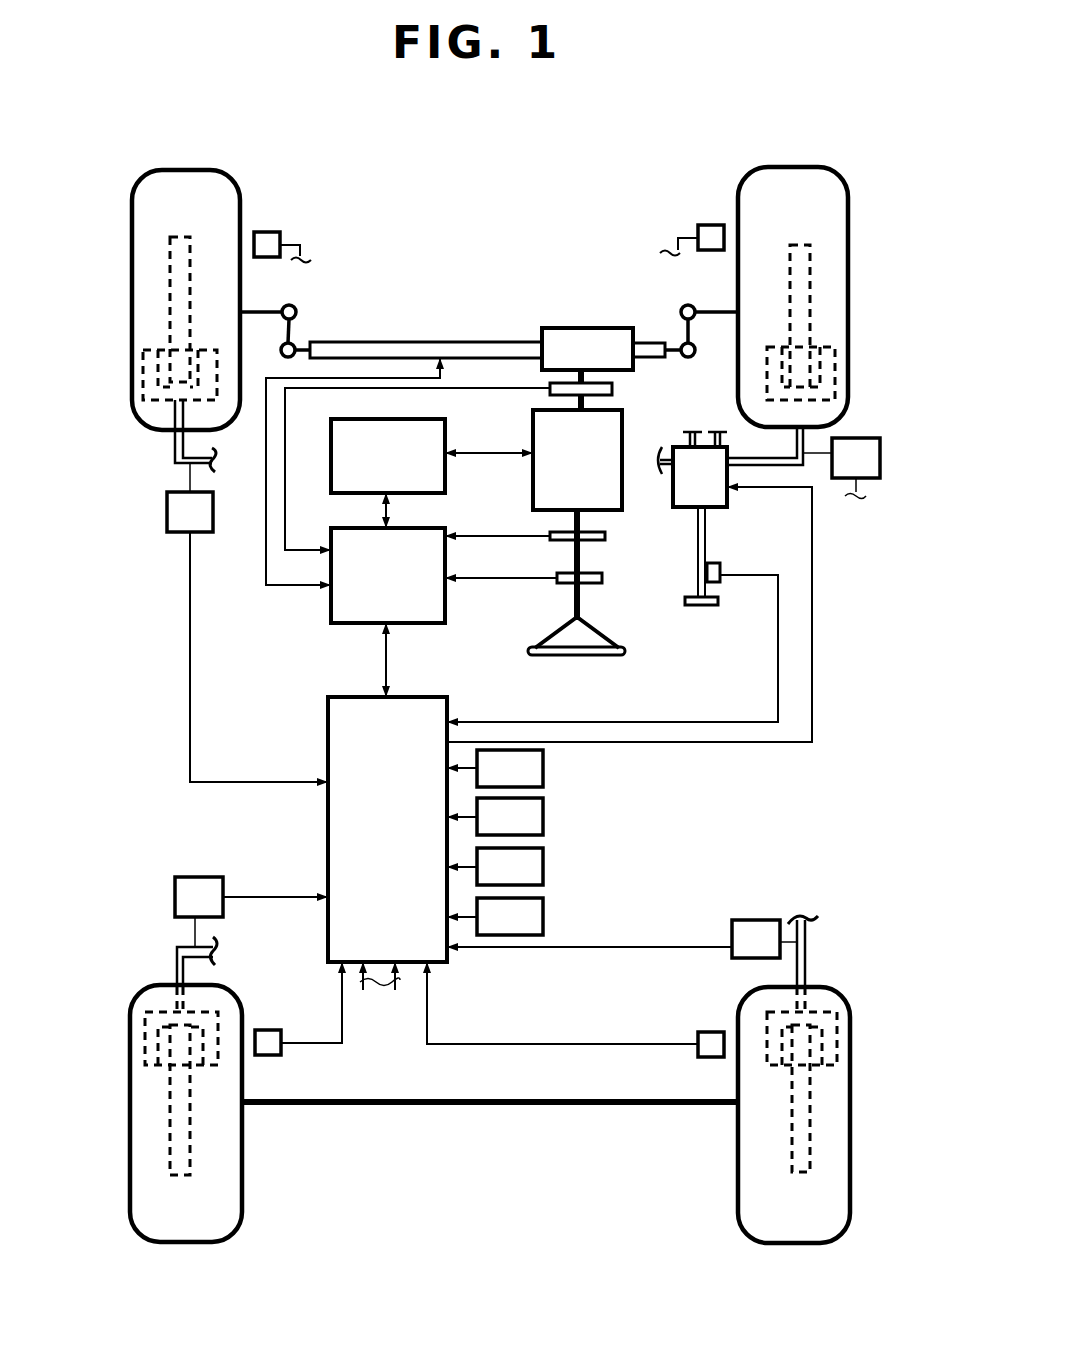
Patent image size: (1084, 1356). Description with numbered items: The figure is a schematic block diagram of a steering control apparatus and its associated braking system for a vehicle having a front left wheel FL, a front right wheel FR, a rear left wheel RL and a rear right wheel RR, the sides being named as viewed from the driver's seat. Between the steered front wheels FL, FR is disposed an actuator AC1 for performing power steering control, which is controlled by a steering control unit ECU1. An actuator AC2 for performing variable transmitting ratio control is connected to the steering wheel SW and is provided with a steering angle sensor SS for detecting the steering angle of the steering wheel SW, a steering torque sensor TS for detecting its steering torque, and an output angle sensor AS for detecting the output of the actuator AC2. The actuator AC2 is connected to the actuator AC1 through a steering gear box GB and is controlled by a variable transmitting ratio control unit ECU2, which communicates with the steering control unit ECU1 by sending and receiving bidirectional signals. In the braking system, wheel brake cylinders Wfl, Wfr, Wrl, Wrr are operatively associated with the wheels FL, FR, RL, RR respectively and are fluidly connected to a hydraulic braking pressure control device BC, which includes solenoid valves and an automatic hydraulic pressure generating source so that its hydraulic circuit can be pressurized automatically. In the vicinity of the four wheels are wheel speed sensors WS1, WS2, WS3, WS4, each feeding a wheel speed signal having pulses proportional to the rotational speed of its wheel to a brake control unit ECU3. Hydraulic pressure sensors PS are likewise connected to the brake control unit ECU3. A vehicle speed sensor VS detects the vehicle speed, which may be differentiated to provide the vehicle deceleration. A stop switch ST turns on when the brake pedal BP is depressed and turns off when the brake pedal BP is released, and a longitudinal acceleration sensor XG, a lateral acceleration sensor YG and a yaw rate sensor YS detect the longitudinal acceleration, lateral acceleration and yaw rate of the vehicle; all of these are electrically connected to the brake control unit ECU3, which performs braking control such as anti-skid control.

The front left wheel FL is at (130, 225).
The front right wheel FR is at (848, 222).
The rear left wheel RL is at (130, 1120).
The rear right wheel RR is at (850, 1090).
The wheel brake cylinder Wfl is at (140, 395).
The wheel brake cylinder Wfr is at (835, 375).
The wheel brake cylinder Wrl is at (138, 988).
The wheel brake cylinder Wrr is at (853, 1000).
The wheel speed sensor WS1 is at (283, 229).
The wheel speed sensor WS2 is at (692, 225).
The wheel speed sensor WS3 is at (296, 1008).
The wheel speed sensor WS4 is at (574, 1009).
The hydraulic pressure sensor PS is at (523, 693).
The actuator AC1 is at (400, 342).
The actuator AC2 is at (577, 460).
The steering gear box GB is at (581, 328).
The output angle sensor AS is at (612, 388).
The steering torque sensor TS is at (605, 536).
The steering angle sensor SS is at (602, 578).
The steering wheel SW is at (625, 655).
The steering control unit ECU1 is at (408, 527).
The variable transmitting ratio control unit ECU2 is at (432, 473).
The brake control unit ECU3 is at (387, 829).
The yaw rate sensor YS is at (495, 768).
The longitudinal acceleration sensor XG is at (495, 816).
The lateral acceleration sensor YG is at (495, 866).
The vehicle speed sensor VS is at (495, 916).
The hydraulic braking pressure control device BC is at (629, 587).
The stop switch ST is at (720, 565).
The brake pedal BP is at (718, 605).